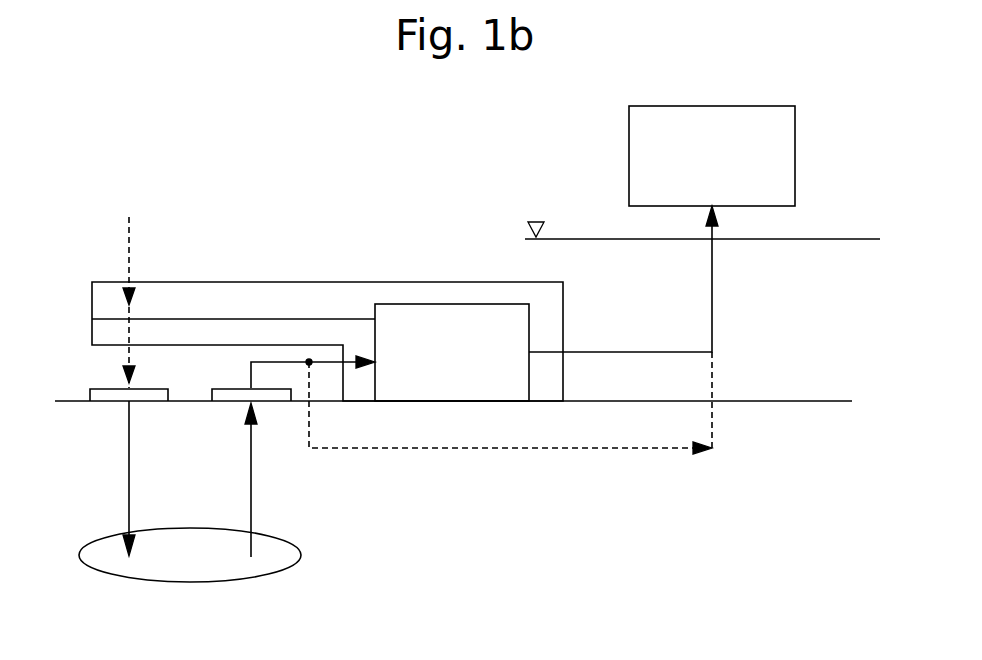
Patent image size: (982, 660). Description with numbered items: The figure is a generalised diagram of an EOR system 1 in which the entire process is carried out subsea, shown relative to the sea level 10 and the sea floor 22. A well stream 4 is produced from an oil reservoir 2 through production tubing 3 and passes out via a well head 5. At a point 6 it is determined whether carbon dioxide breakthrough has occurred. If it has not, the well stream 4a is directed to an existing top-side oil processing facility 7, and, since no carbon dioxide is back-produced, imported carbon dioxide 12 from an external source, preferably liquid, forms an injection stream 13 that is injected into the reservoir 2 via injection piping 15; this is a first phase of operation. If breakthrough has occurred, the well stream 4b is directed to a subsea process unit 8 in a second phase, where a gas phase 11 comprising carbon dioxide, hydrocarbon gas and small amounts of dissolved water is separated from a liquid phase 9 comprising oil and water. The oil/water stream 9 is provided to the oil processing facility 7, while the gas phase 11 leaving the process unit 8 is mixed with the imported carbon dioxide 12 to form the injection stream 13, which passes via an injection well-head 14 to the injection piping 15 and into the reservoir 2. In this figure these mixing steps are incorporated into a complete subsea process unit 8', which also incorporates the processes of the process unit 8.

The EOR system 1 is at (434, 186).
The oil reservoir 2 is at (190, 570).
The production tubing 3 is at (252, 477).
The well stream 4 is at (252, 510).
The well stream 4a is at (580, 450).
The well stream 4b is at (340, 360).
The well head 5 is at (226, 404).
The point 6 is at (308, 358).
The top-side oil processing facility 7 is at (688, 119).
The subsea process unit 8 is at (452, 320).
The complete subsea process unit 8' is at (327, 300).
The liquid phase 9 is at (623, 279).
The sea level 10 is at (842, 239).
The gas phase 11 is at (213, 318).
The imported CO2 12 is at (128, 238).
The injection stream 13 is at (129, 331).
The injection well-head 14 is at (101, 404).
The injection piping 15 is at (128, 497).
The sea floor 22 is at (800, 400).